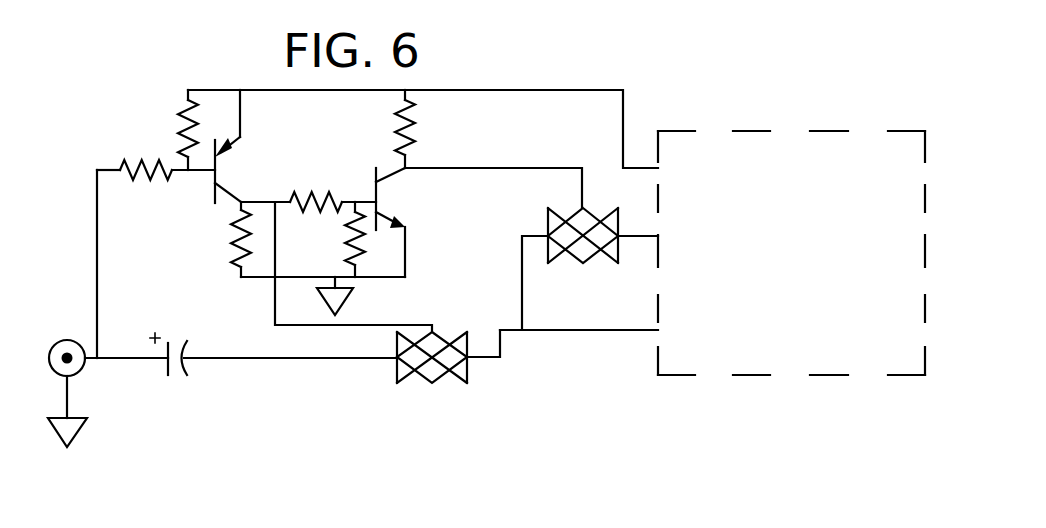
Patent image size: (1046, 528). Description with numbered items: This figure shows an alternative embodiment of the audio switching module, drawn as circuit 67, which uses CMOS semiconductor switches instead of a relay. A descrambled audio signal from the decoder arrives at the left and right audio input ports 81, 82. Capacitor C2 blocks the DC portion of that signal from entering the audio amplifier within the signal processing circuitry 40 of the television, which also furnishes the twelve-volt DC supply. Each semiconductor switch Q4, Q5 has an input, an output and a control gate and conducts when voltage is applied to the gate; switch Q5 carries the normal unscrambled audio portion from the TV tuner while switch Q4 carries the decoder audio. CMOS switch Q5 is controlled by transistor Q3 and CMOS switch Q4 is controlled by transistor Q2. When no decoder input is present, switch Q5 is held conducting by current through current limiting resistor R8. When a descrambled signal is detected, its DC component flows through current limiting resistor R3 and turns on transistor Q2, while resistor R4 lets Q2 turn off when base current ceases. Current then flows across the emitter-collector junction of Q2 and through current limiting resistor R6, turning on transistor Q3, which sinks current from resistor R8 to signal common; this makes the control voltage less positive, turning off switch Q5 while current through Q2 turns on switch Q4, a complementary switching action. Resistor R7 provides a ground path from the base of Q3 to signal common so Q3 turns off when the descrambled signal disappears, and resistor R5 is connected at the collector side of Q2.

The audio switching/buffer circuit 67 is at (238, 78).
The signal processing circuitry 40 is at (757, 376).
The left audio input port 81 is at (107, 393).
The right audio input port 82 is at (81, 368).
The current limiting resistor R3 is at (156, 158).
The resistor R4 is at (205, 130).
The resistor R5 is at (224, 239).
The current limiting resistor R6 is at (333, 189).
The resistor R7 is at (337, 239).
The current limiting resistor R8 is at (423, 129).
The transistor Q2 is at (236, 170).
The transistor Q3 is at (396, 222).
The CMOS semiconductor switch Q4 is at (432, 371).
The CMOS semiconductor switch Q5 is at (583, 249).
The capacitor C2 is at (169, 371).